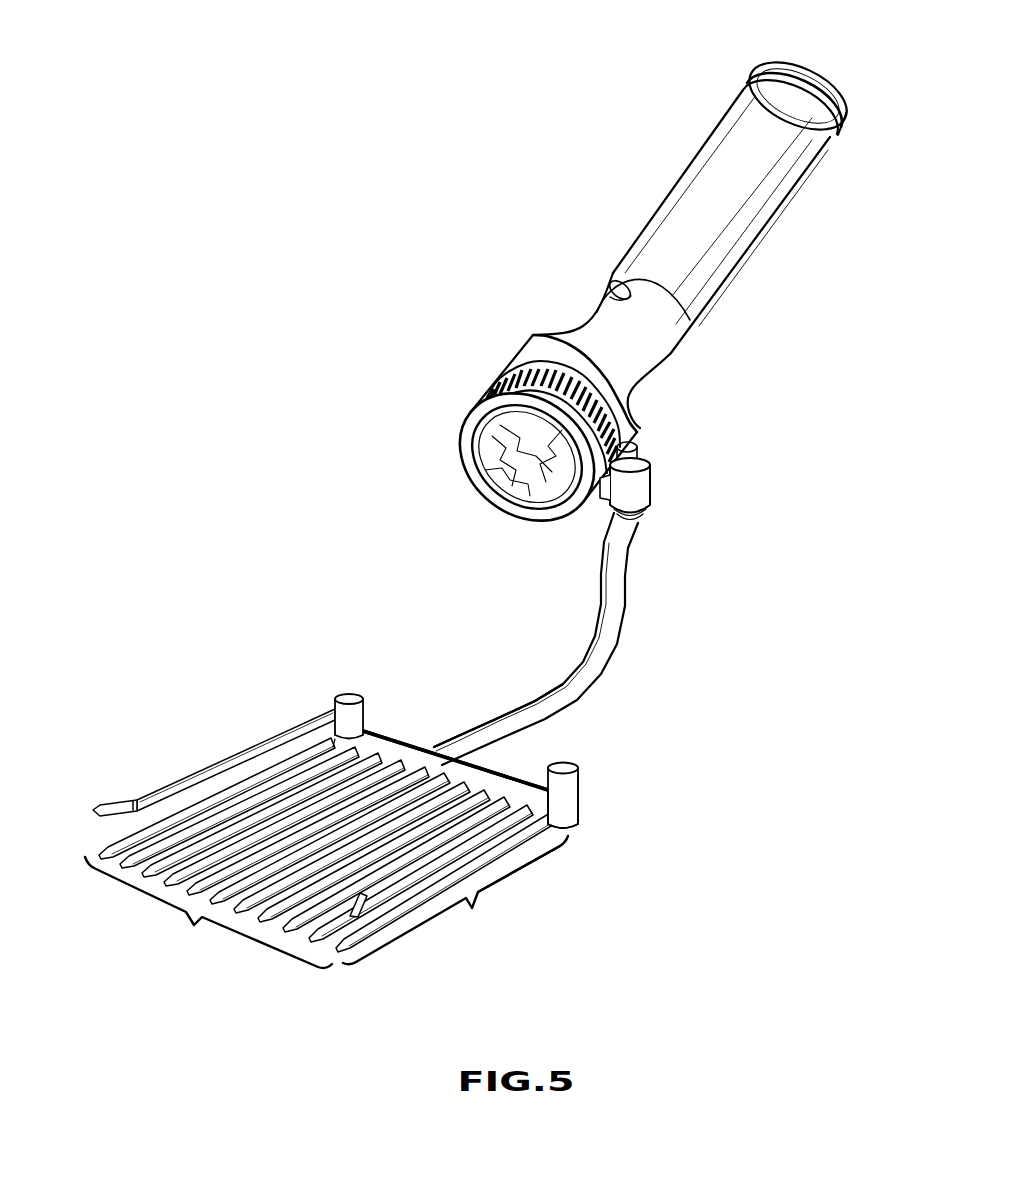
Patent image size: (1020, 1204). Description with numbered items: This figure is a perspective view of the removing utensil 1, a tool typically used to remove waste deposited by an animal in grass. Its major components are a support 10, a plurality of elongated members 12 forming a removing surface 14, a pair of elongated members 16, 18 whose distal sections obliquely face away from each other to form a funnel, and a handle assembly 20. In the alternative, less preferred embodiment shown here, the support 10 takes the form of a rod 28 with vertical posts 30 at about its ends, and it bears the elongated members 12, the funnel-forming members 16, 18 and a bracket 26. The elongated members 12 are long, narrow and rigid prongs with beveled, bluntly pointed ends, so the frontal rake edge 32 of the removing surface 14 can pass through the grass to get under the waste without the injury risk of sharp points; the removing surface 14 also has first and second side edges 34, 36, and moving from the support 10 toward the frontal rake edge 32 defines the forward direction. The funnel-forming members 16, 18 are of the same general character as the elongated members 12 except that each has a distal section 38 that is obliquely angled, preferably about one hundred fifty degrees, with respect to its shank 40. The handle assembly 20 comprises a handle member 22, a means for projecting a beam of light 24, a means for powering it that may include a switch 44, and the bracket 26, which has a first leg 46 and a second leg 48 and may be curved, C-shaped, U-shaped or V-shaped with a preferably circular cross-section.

The utensil 1 is at (252, 154).
The support 10 is at (421, 717).
The elongated members 12 is at (308, 833).
The removing surface 14 is at (455, 900).
The elongated member having a distal section that obliquely faces away 16 is at (299, 722).
The elongated member having a distal section that obliquely faces away 18 is at (584, 794).
The handle assembly 20 is at (776, 372).
The handle member 22 is at (686, 172).
The means for projecting a beam of light 24 is at (505, 447).
The bracket 26 is at (618, 612).
The rod 28 is at (384, 732).
The vertical posts 30 is at (348, 695).
The frontal rake edge 32 is at (208, 912).
The first side edge 34 is at (150, 763).
The second side edge 36 is at (556, 881).
The distal section 38 is at (103, 789).
The shank 40 is at (253, 746).
The switch 44 is at (612, 288).
The first leg 46 is at (532, 708).
The second leg 48 is at (612, 545).